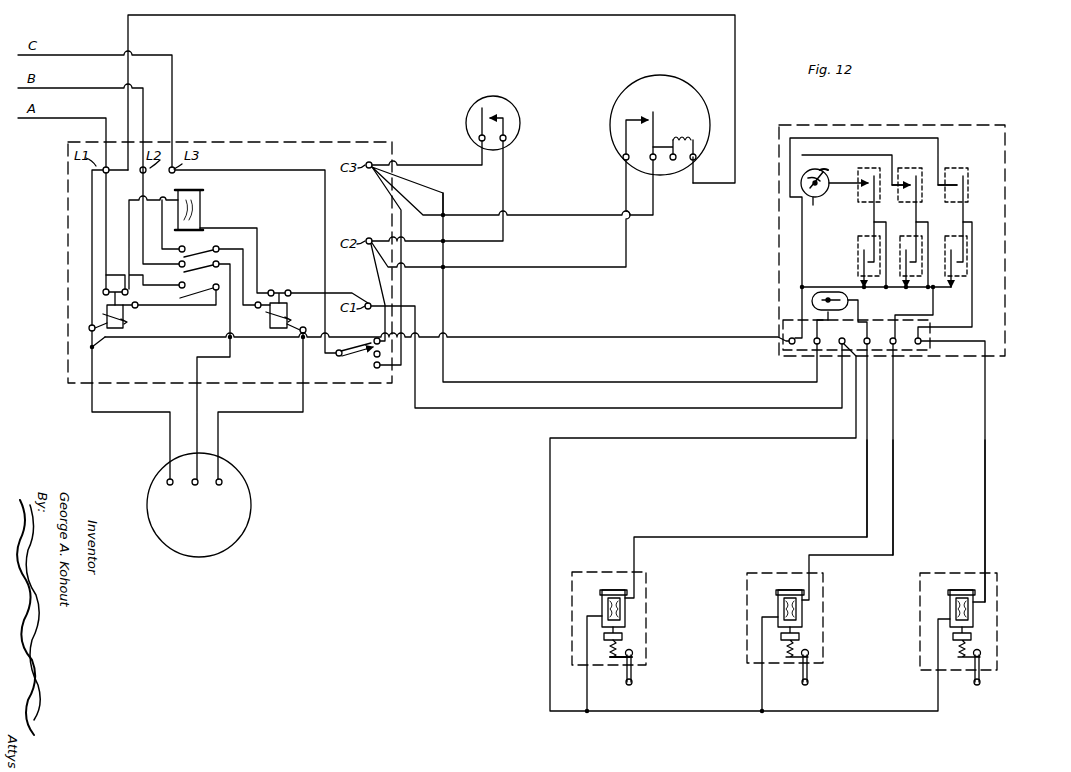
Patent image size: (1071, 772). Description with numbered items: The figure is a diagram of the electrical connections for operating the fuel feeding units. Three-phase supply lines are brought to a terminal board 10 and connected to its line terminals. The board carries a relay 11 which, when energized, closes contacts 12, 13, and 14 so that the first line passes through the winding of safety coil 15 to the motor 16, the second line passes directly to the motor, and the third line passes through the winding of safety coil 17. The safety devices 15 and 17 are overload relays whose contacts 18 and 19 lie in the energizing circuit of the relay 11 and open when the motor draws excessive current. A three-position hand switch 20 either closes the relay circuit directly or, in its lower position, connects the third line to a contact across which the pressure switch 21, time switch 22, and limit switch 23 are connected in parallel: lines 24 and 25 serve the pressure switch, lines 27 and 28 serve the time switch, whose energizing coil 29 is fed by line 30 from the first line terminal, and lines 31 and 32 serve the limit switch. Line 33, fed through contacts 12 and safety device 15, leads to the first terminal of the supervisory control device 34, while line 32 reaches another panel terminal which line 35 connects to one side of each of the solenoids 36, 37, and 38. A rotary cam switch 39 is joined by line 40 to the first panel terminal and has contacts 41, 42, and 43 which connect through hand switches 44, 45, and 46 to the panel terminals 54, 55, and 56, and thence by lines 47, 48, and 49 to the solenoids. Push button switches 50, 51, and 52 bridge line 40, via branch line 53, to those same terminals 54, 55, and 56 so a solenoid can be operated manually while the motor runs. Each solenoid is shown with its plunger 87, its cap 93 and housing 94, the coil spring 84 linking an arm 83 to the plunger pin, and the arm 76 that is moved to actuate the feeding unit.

The terminal board 10 is at (256, 140).
The relay 11 is at (203, 205).
The contact 12 is at (177, 291).
The contact 13 is at (178, 267).
The contact 14 is at (178, 252).
The safety coil 15 is at (106, 321).
The motor 16 is at (148, 493).
The safety coil 17 is at (268, 316).
The contacts 18 is at (102, 293).
The contacts 19 is at (291, 294).
The hand switch 20 is at (342, 358).
The pressure switch 21 is at (466, 116).
The time switch 22 is at (612, 118).
The limit switch 23 is at (812, 302).
The line 24 is at (460, 162).
The line 25 is at (502, 186).
The line 27 is at (570, 214).
The line 28 is at (556, 266).
The energizing coil 29 is at (680, 129).
The line 30 is at (568, 15).
The line 31 is at (602, 380).
The line 32 is at (530, 407).
The line 33 is at (146, 337).
The supervisory control device 34 is at (1010, 241).
The line 35 is at (712, 440).
The solenoid 36 is at (630, 617).
The solenoid 37 is at (806, 617).
The solenoid 38 is at (978, 621).
The rotary cam switch 39 is at (801, 186).
The line 40 is at (800, 184).
The contact 41 is at (839, 190).
The contact 42 is at (824, 172).
The contact 43 is at (810, 198).
The hand switch 44 is at (880, 193).
The hand switch 45 is at (930, 193).
The hand switch 46 is at (972, 194).
The line 47 is at (866, 493).
The line 48 is at (894, 493).
The line 49 is at (986, 501).
The push button switch 50 is at (857, 258).
The push button switch 51 is at (918, 278).
The push button switch 52 is at (962, 278).
The branch line 53 is at (840, 286).
The terminal 54 is at (866, 345).
The terminal 55 is at (892, 345).
The terminal 56 is at (919, 344).
The arm 76 is at (634, 681).
The arm 83 is at (617, 663).
The coil spring 84 is at (616, 650).
The solenoid plunger 87 is at (624, 631).
The solenoid cap 93 is at (618, 588).
The solenoid housing 94 is at (606, 592).